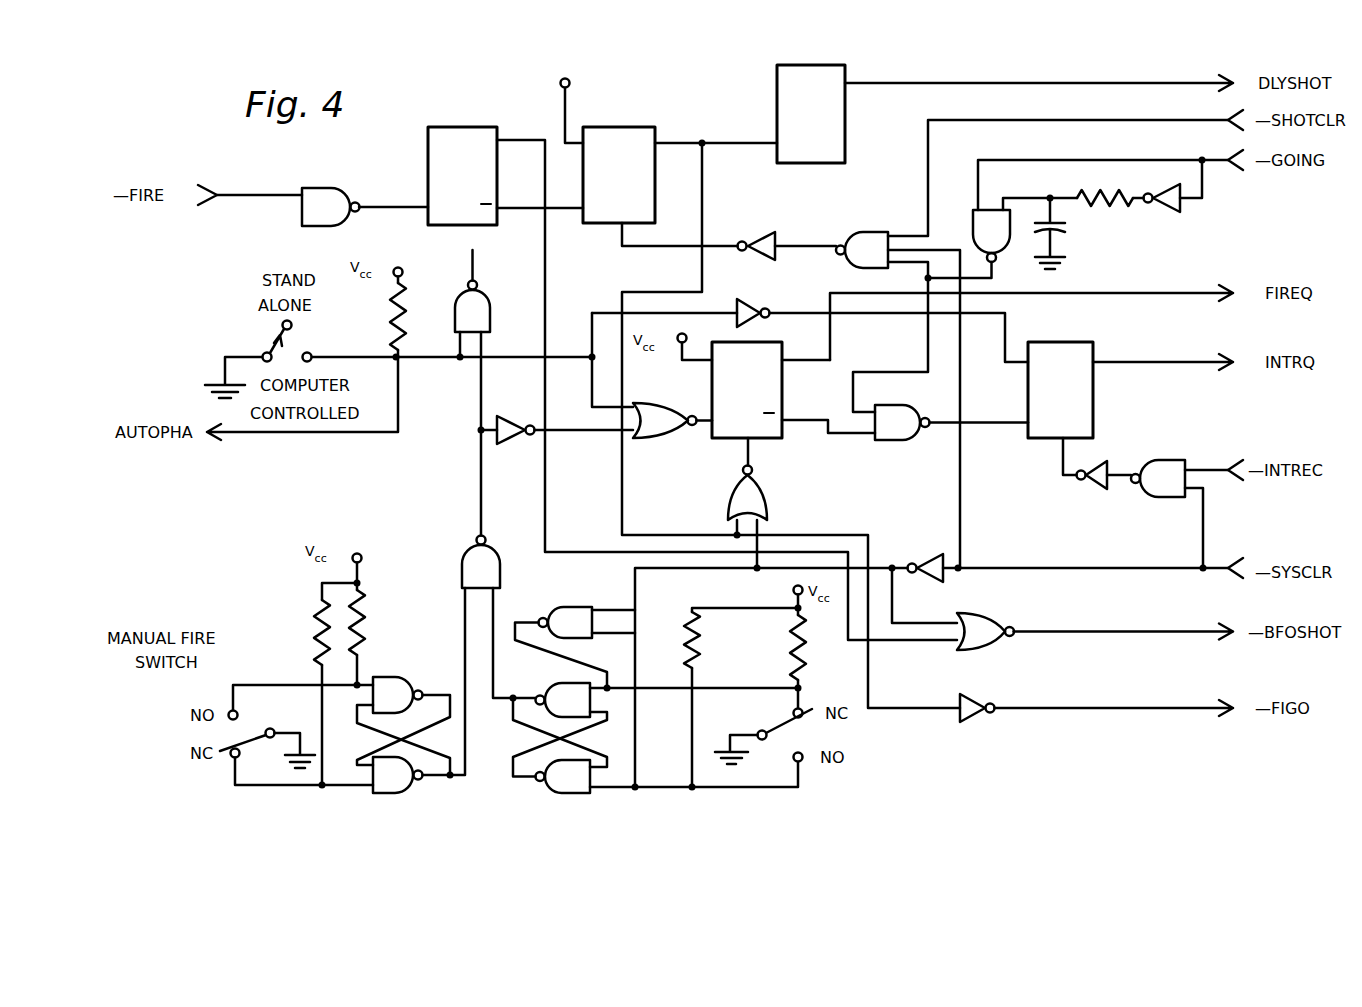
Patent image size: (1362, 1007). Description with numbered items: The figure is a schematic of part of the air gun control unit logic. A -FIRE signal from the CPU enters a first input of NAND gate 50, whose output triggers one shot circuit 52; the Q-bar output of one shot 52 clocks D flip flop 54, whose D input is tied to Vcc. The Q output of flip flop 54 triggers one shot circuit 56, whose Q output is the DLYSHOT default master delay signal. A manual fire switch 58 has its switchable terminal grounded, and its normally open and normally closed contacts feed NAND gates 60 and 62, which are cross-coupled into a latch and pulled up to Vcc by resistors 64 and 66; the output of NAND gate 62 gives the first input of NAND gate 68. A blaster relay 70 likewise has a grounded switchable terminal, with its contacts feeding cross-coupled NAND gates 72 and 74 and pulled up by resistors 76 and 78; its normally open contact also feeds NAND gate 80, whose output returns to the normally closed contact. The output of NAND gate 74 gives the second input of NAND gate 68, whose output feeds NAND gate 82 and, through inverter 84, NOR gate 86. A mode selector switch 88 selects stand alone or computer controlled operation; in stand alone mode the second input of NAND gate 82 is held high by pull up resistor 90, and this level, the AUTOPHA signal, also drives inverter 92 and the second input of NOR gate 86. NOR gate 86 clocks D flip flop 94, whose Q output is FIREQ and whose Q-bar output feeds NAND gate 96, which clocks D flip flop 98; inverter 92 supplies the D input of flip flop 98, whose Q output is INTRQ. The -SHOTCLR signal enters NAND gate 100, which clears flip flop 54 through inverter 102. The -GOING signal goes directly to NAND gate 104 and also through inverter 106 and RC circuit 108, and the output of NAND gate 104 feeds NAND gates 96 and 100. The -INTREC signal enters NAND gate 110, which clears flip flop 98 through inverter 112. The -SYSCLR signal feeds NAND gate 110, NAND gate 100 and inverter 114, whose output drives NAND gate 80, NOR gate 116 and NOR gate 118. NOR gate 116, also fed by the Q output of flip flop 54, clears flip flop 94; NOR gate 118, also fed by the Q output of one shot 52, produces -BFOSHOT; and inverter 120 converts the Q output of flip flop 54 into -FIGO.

The NAND gate 50 is at (325, 188).
The one shot circuit 52 is at (458, 127).
The D flip flop 54 is at (614, 127).
The one shot circuit 56 is at (805, 78).
The manual fire switch 58 is at (206, 790).
The NAND gate 60 is at (390, 684).
The NAND gate 62 is at (400, 790).
The resistor 64 is at (315, 645).
The resistor 66 is at (362, 618).
The NAND gate 68 is at (468, 562).
The blaster relay 70 is at (848, 794).
The NAND gate 72 is at (558, 790).
The NAND gate 74 is at (560, 685).
The resistor 76 is at (705, 665).
The resistor 78 is at (810, 650).
The NAND gate 80 is at (572, 610).
The NAND gate 82 is at (492, 312).
The inverter 84 is at (512, 424).
The NOR gate 86 is at (655, 406).
The mode selector switch 88 is at (240, 317).
The pull up resistor 90 is at (410, 315).
The inverter 92 is at (750, 305).
The D flip flop 94 is at (779, 387).
The NAND gate 96 is at (895, 441).
The D flip flop 98 is at (1058, 345).
The NAND gate 100 is at (861, 232).
The inverter 102 is at (753, 232).
The NAND gate 104 is at (982, 223).
The inverter 106 is at (1165, 210).
The RC circuit 108 is at (1133, 251).
The NAND gate 110 is at (1162, 462).
The inverter 112 is at (1086, 480).
The inverter 114 is at (930, 560).
The NOR gate 116 is at (750, 505).
The NOR gate 118 is at (970, 618).
The inverter 120 is at (970, 695).